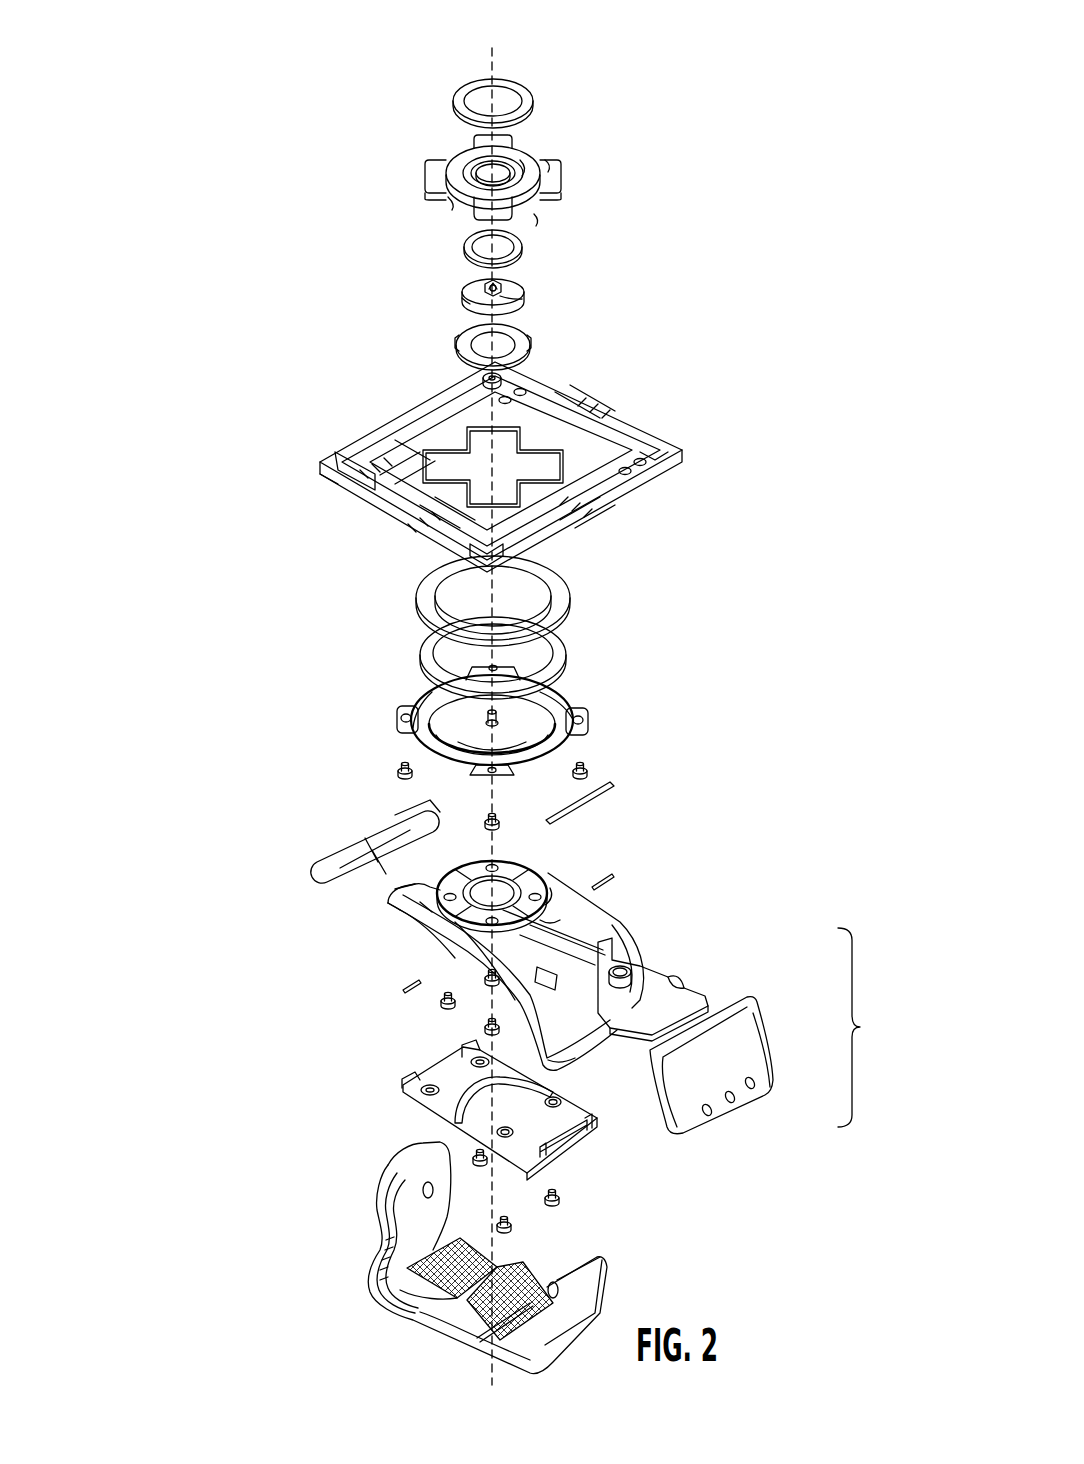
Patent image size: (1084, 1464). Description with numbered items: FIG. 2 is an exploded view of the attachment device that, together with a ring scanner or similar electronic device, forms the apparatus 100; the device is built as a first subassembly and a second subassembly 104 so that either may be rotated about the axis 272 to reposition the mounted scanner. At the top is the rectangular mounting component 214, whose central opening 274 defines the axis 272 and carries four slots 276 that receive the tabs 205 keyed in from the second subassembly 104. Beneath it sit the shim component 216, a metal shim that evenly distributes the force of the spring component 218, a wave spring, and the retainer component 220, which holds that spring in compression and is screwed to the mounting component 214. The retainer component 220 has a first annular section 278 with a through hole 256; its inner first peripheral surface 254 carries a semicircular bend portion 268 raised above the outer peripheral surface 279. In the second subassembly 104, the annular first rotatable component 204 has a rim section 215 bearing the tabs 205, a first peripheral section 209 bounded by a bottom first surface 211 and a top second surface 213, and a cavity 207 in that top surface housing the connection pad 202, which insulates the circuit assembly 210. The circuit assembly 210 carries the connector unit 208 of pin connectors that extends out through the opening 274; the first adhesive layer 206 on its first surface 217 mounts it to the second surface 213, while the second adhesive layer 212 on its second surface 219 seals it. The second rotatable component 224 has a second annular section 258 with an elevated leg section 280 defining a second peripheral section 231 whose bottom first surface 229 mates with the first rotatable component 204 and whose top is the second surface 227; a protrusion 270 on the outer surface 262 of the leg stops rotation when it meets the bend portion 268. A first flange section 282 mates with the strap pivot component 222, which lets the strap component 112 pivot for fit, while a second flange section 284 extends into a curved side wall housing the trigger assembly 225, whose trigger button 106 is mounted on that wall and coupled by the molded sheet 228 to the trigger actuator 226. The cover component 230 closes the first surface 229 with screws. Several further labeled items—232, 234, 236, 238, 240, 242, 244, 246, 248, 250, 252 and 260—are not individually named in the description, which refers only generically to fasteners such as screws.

The apparatus 100 is at (205, 208).
The second subassembly 104 is at (367, 1240).
The trigger button 106 is at (752, 1083).
The strap component 112 is at (428, 1287).
The connection pad 202 is at (444, 104).
The first rotatable component 204 is at (468, 167).
The tabs 205 is at (420, 182).
The first adhesive layer 206 is at (462, 246).
The cavity 207 is at (497, 160).
The connector unit 208 is at (512, 290).
The first peripheral section 209 is at (548, 163).
The circuit assembly 210 is at (463, 293).
The first surface 211 is at (537, 220).
The second adhesive layer 212 is at (461, 337).
The second surface 213 is at (522, 166).
The mounting component 214 is at (351, 452).
The rim section 215 is at (453, 202).
The shim component 216 is at (436, 563).
The first surface 217 is at (506, 300).
The spring component 218 is at (420, 658).
The second surface 219 is at (468, 304).
The retainer component 220 is at (400, 708).
The strap pivot component 222 is at (351, 841).
The second rotatable component 224 is at (614, 926).
The trigger assembly 225 is at (867, 1027).
The trigger actuator 226 is at (634, 970).
The second surface 227 is at (478, 850).
The molded sheet 228 is at (678, 1003).
The first surface 229 is at (398, 910).
The cover component 230 is at (399, 1077).
The second peripheral section 231 is at (398, 891).
The pin 232 is at (508, 721).
The fastener 234 is at (594, 773).
The fastener 236 is at (394, 769).
The fastener 238 is at (487, 817).
The fastener 240 is at (440, 989).
The fastener 242 is at (486, 970).
The fastener 244 is at (484, 1023).
The fastener 246 is at (478, 1146).
The hole 248 is at (426, 1178).
The fastener 250 is at (565, 1203).
The fastener 252 is at (518, 1234).
The first peripheral surface 254 is at (554, 695).
The through hole 256 is at (529, 735).
The second annular section 258 is at (536, 874).
The side wall 260 is at (427, 913).
The outer surface 262 is at (558, 902).
The bend portion 268 is at (436, 735).
The protrusion 270 is at (557, 905).
The axis 272 is at (473, 719).
The opening 274 is at (547, 447).
The slot 276 is at (652, 465).
The first annular section 278 is at (557, 717).
The outer peripheral surface 279 is at (432, 748).
The elevated leg section 280 is at (455, 922).
The first flange section 282 is at (393, 896).
The second flange section 284 is at (549, 918).